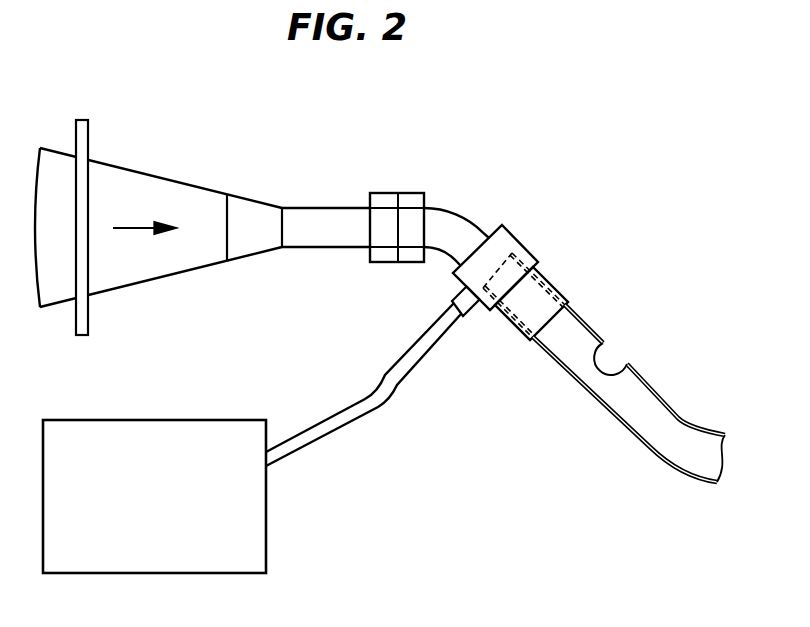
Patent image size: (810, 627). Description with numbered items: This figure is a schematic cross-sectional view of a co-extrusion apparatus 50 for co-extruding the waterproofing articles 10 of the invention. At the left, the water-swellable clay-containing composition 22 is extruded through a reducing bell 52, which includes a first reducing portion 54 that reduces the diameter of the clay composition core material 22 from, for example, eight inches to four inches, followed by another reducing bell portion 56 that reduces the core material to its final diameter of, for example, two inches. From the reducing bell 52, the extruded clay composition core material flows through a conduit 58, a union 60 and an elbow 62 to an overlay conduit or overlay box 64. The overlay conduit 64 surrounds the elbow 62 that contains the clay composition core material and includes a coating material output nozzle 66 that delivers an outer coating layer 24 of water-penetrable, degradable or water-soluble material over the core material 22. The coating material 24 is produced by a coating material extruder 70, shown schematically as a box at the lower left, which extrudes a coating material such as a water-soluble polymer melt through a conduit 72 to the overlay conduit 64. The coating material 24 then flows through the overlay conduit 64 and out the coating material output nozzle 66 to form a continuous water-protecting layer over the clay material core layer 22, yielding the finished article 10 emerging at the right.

The article 10 is at (644, 393).
The water-swellable clay-containing composition 22 is at (613, 353).
The coating layer 24 is at (650, 382).
The apparatus 50 is at (100, 94).
The reducing bell 52 is at (160, 154).
The first reducing portion 54 is at (205, 200).
The reducing bell portion 56 is at (260, 212).
The conduit 58 is at (337, 217).
The union 60 is at (413, 193).
The elbow 62 is at (473, 220).
The overlay conduit 64 is at (503, 242).
The coating material output nozzle 66 is at (543, 278).
The coating material extruder 70 is at (266, 513).
The conduit 72 is at (378, 407).